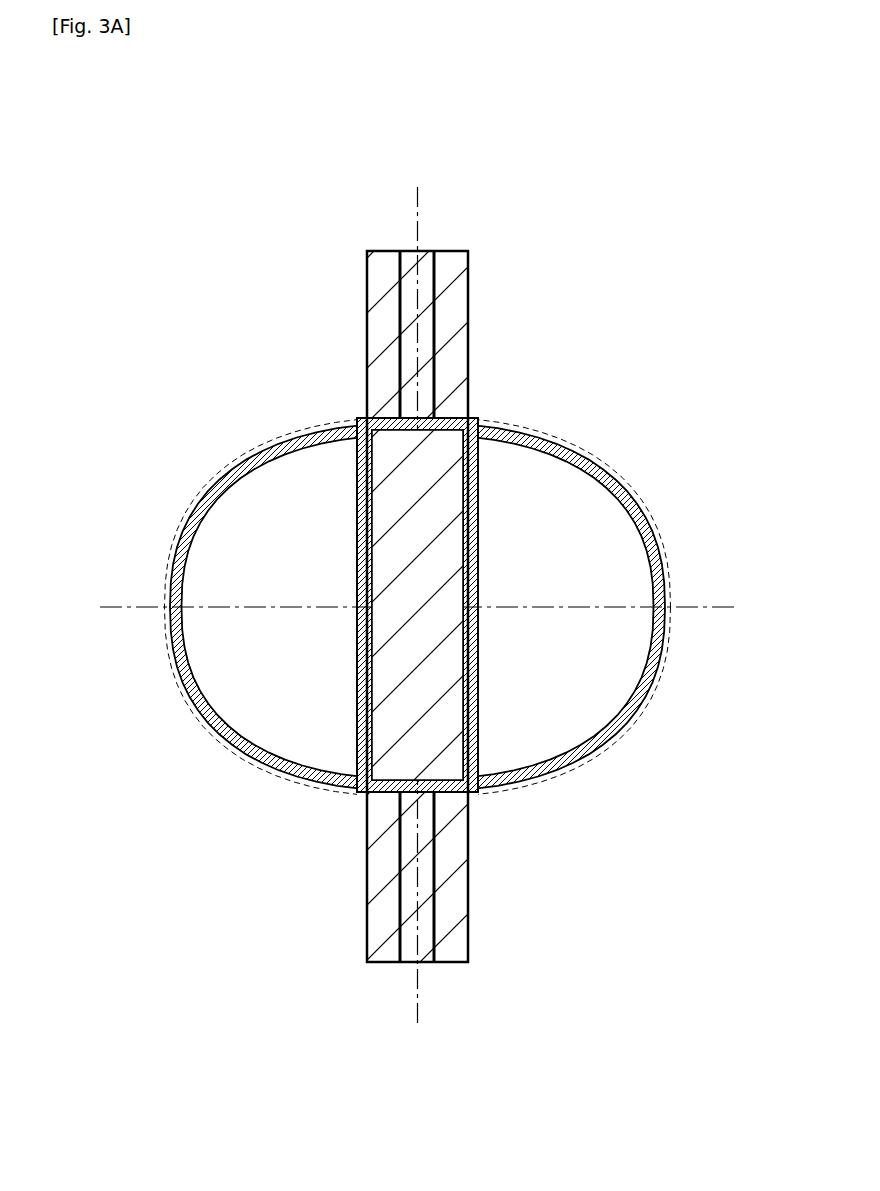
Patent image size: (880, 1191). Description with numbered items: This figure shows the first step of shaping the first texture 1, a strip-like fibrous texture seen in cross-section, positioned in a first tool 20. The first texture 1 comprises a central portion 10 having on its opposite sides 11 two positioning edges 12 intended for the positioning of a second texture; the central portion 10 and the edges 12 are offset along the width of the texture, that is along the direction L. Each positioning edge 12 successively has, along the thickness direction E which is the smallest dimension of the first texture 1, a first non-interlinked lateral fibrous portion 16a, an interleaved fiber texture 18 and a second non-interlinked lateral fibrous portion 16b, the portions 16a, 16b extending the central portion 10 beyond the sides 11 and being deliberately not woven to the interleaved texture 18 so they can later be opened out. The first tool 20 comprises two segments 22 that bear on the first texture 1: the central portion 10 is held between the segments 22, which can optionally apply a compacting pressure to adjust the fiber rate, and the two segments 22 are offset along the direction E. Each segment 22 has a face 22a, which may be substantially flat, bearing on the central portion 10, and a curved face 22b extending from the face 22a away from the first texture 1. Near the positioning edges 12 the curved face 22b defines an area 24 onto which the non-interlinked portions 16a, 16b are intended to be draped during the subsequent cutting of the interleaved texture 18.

The first texture 1 is at (550, 172).
The central portion 10 is at (496, 611).
The sides 11 is at (470, 418).
The positioning edges 12 is at (500, 322).
The first non-interlinked lateral fibrous portion 16a is at (380, 300).
The second non-interlinked lateral fibrous portion 16b is at (460, 387).
The interleaved fiber texture 18 is at (418, 340).
The first tool 20 is at (625, 338).
The segments 22 is at (162, 563).
The face 22a is at (385, 416).
The curved face 22b is at (192, 520).
The area 24 is at (255, 450).
The width direction L is at (418, 212).
The thickness direction E is at (700, 608).